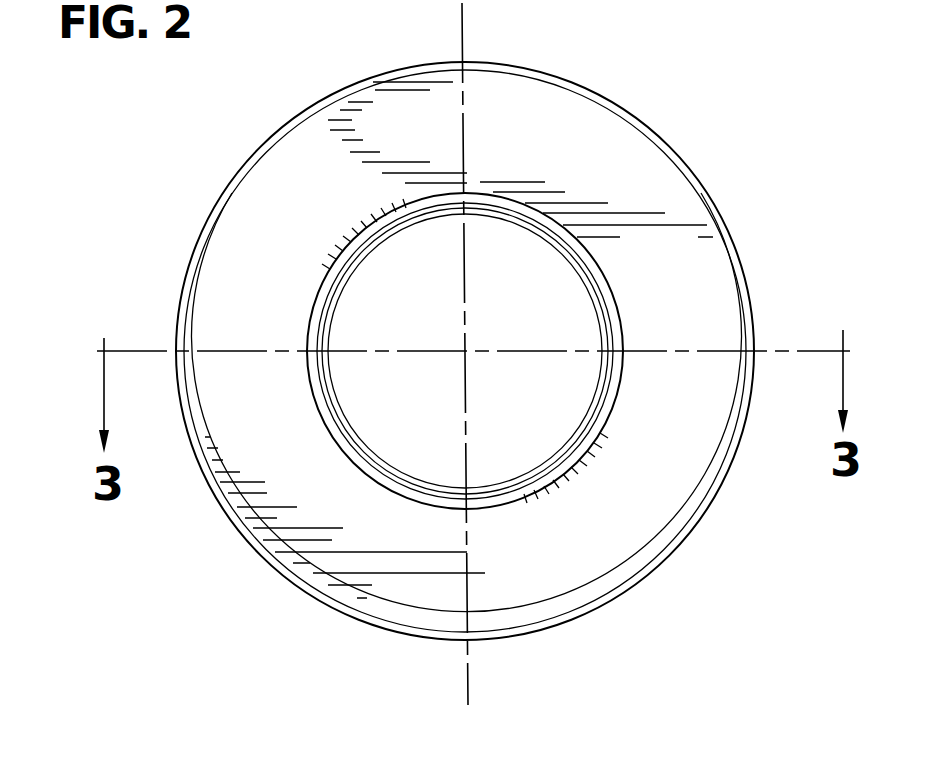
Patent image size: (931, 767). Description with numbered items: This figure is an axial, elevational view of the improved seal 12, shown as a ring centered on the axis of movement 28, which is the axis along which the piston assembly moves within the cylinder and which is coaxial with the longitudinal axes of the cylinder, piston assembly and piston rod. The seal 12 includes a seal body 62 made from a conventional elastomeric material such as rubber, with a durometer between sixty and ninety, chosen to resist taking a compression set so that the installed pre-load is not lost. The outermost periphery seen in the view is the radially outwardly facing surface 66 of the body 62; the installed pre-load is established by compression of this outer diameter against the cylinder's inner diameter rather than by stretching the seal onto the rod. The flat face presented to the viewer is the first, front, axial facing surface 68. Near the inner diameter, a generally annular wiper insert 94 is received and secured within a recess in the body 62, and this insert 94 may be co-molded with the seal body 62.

The seal 12 is at (214, 515).
The axis of movement 28 is at (460, 42).
The seal body 62 is at (680, 212).
The radially outwardly facing surface 66 is at (530, 69).
The first, front, axial facing surface 68 is at (282, 453).
The wiper insert 94 is at (552, 230).